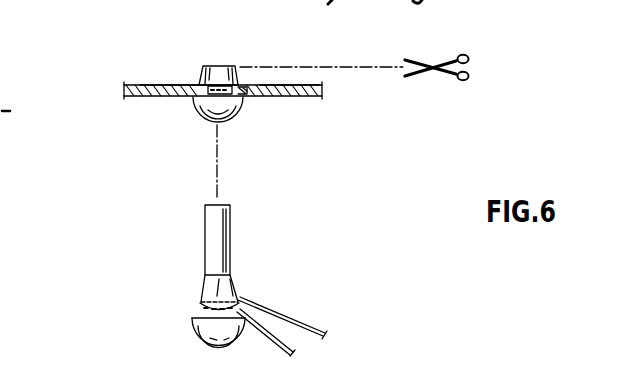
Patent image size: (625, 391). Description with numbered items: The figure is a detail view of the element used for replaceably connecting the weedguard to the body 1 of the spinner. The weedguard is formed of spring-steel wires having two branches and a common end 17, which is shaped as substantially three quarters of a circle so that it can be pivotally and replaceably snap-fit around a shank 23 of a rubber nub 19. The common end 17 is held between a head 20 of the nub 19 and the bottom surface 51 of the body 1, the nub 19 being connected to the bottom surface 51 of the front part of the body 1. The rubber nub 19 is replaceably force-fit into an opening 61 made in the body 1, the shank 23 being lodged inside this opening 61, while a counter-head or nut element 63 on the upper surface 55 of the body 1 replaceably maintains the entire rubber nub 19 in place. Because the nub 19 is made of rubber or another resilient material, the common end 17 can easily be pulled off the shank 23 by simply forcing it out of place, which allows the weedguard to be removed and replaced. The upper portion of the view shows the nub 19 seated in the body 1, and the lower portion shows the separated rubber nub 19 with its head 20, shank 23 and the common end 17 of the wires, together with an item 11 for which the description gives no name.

The body 1 is at (287, 84).
The setting tool 11 is at (248, 288).
The common end 17 is at (227, 316).
The rubber nub 19 is at (246, 109).
The head 20 is at (197, 107).
The shank 23 is at (215, 93).
The bottom surface 51 is at (150, 96).
The upper surface 55 is at (158, 84).
The opening 61 is at (247, 93).
The counter-head or nut element 63 is at (217, 74).